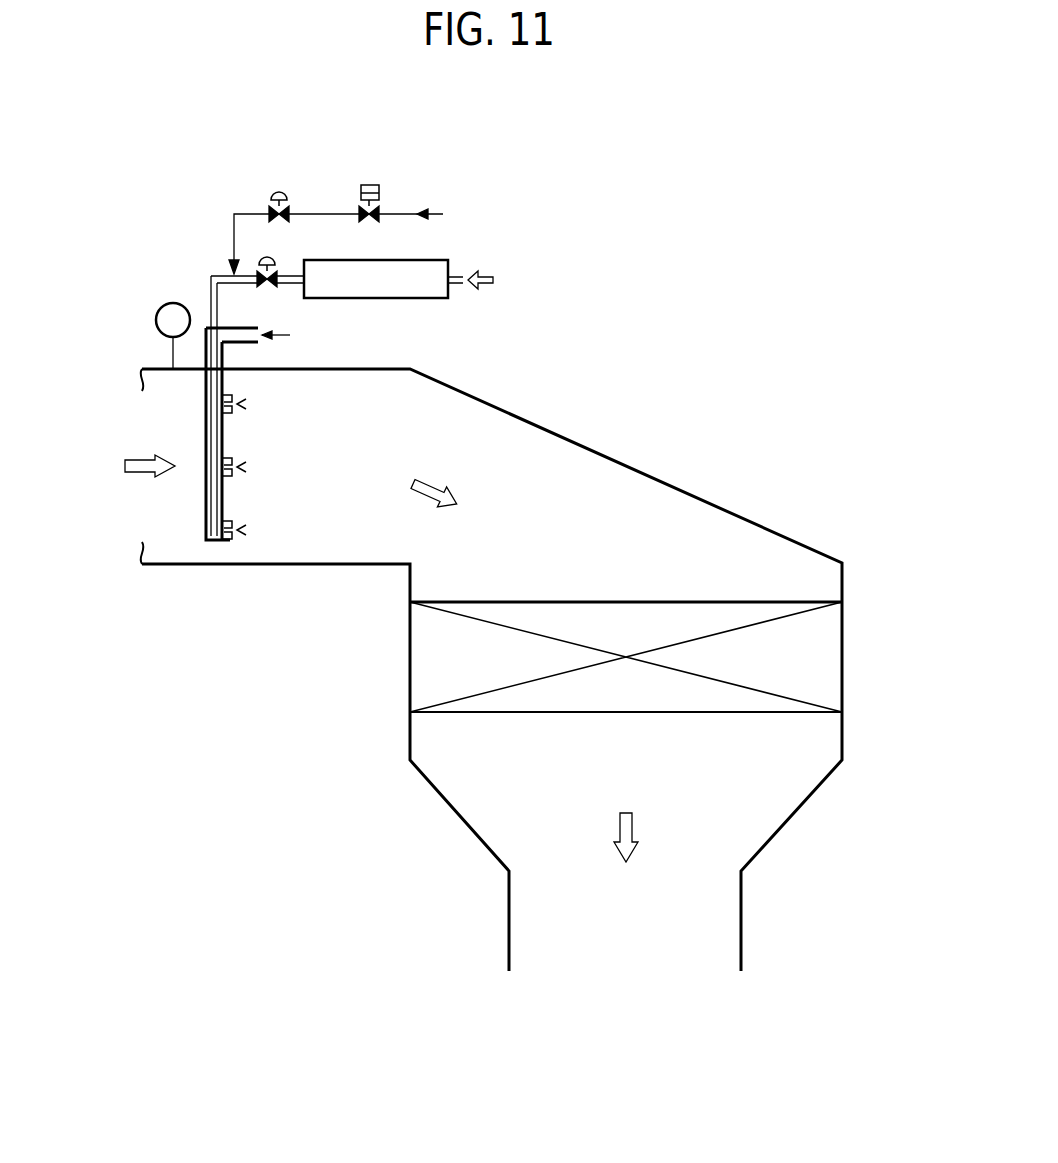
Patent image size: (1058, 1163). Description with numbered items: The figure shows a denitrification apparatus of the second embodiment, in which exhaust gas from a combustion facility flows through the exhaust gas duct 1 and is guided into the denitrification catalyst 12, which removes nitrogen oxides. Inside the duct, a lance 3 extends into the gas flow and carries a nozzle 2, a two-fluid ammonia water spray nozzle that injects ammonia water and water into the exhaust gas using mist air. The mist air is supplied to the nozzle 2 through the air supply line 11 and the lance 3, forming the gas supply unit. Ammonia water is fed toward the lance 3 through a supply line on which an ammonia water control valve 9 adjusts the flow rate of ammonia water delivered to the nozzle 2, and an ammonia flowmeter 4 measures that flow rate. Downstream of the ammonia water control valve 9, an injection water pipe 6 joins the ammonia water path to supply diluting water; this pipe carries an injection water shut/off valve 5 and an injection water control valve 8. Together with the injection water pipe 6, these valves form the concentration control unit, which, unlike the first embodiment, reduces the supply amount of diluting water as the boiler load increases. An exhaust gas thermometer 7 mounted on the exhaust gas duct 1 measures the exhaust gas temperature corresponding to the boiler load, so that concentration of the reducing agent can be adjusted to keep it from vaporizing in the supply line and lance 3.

The exhaust gas duct 1 is at (162, 369).
The nozzle 2 is at (258, 387).
The lance 3 is at (206, 422).
The ammonia flowmeter 4 is at (440, 262).
The injection water shut/off valve 5 is at (369, 184).
The injection water pipe 6 is at (243, 208).
The exhaust gas thermometer 7 is at (173, 302).
The injection water control valve 8 is at (278, 191).
The ammonia water control valve 9 is at (276, 258).
The air supply line 11 is at (236, 328).
The denitrification catalyst 12 is at (855, 562).